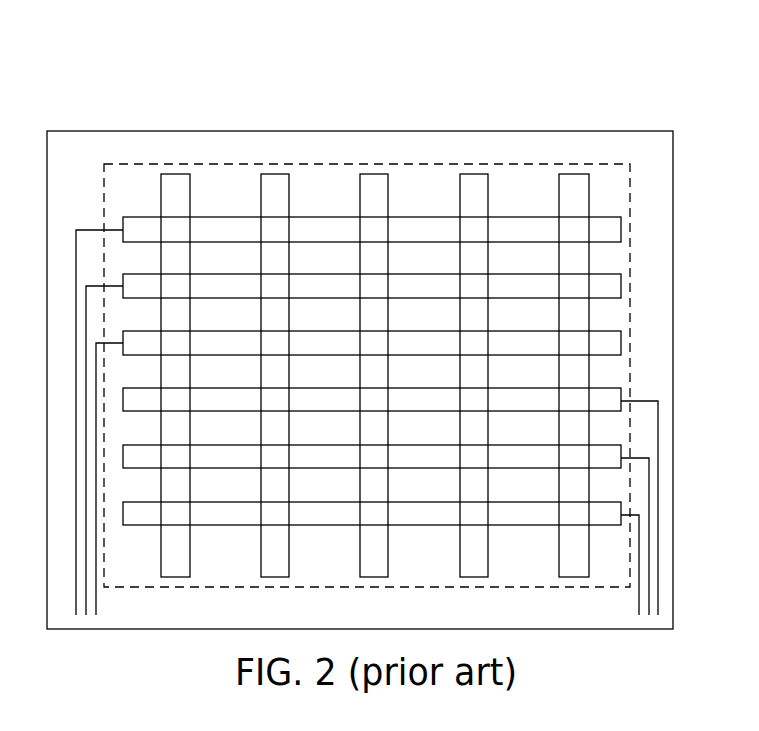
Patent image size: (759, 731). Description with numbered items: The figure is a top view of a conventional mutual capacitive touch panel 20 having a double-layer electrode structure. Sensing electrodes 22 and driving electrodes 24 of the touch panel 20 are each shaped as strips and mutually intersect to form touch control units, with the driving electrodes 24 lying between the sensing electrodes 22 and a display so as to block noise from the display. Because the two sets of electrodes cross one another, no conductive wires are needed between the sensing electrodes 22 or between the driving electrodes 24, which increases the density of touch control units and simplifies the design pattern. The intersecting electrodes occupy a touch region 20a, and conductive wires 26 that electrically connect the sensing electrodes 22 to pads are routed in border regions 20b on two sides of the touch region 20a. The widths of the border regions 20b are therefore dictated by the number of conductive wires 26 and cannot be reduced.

The touch panel 20 is at (370, 315).
The touch region 20a is at (518, 187).
The border regions 20b is at (632, 149).
The sensing electrodes 22 is at (128, 217).
The driving electrodes 24 is at (176, 174).
The conductive wires 26 is at (86, 230).